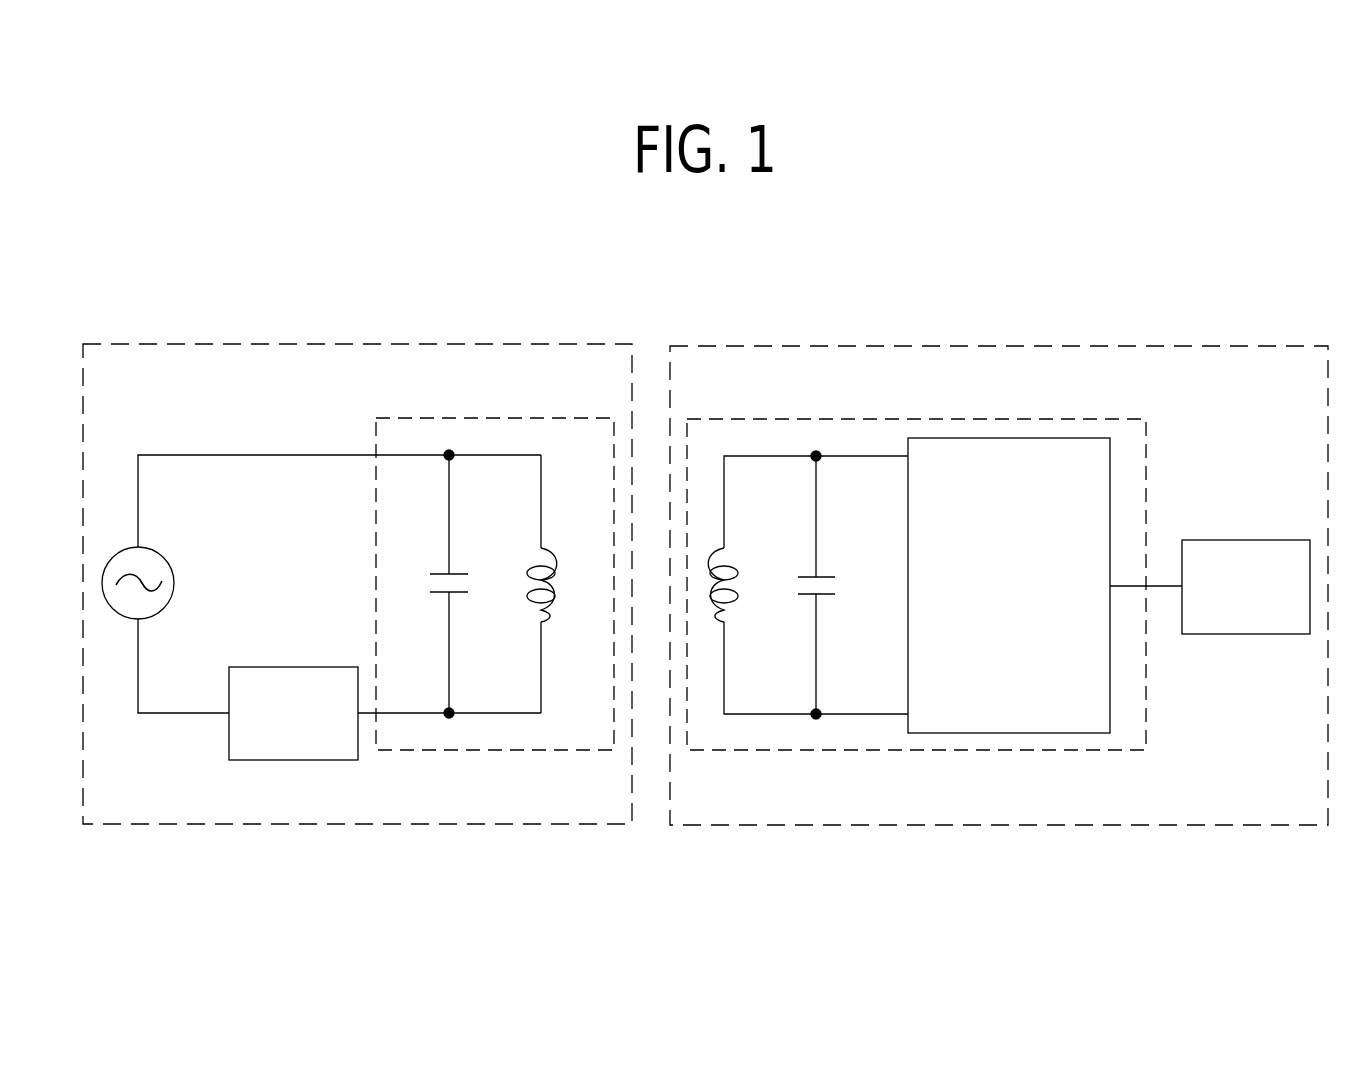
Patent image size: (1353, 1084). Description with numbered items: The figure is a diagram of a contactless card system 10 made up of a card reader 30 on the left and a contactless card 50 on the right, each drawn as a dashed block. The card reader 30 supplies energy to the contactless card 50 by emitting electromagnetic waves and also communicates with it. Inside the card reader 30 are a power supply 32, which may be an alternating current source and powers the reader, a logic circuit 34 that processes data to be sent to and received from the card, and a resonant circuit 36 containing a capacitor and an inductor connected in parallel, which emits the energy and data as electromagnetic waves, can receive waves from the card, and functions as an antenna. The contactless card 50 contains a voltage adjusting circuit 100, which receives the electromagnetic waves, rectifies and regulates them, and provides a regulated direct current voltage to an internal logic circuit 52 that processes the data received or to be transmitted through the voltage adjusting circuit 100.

The contactless card system 10 is at (1292, 256).
The card reader 30 is at (355, 345).
The power supply 32 is at (165, 552).
The logic circuit 34 is at (290, 763).
The resonant circuit 36 is at (497, 418).
The contactless card 50 is at (1000, 345).
The internal logic circuit 52 is at (1247, 540).
The voltage adjusting circuit 100 is at (880, 419).